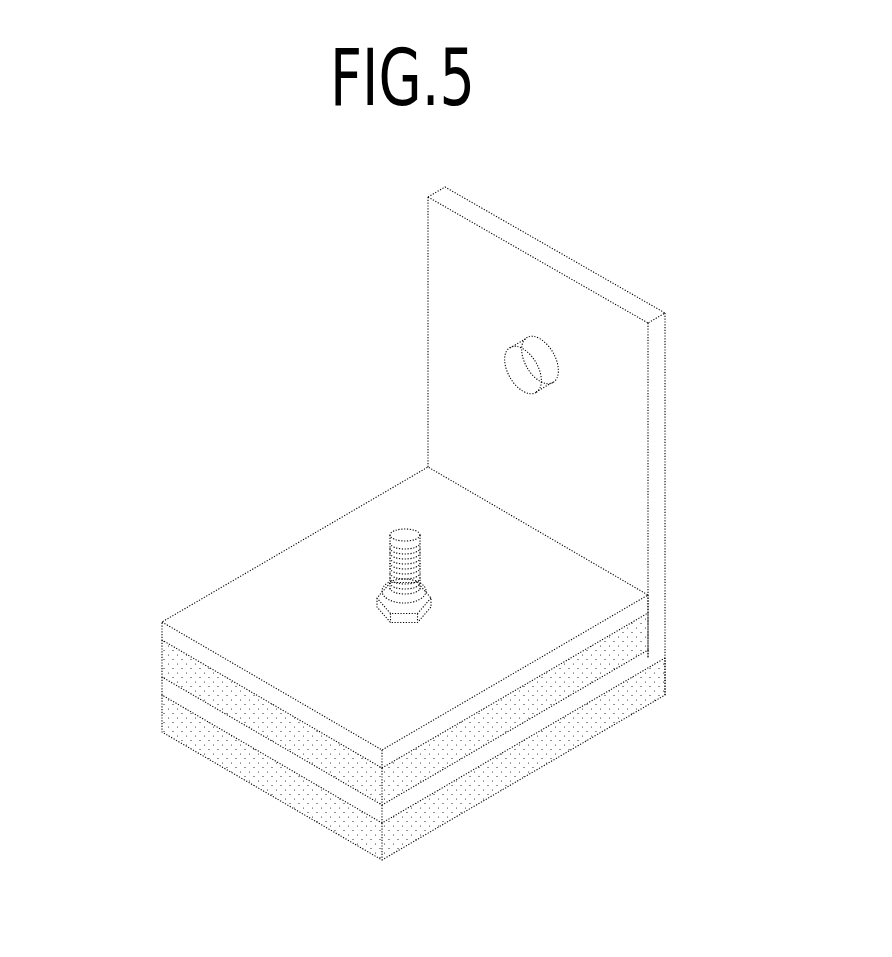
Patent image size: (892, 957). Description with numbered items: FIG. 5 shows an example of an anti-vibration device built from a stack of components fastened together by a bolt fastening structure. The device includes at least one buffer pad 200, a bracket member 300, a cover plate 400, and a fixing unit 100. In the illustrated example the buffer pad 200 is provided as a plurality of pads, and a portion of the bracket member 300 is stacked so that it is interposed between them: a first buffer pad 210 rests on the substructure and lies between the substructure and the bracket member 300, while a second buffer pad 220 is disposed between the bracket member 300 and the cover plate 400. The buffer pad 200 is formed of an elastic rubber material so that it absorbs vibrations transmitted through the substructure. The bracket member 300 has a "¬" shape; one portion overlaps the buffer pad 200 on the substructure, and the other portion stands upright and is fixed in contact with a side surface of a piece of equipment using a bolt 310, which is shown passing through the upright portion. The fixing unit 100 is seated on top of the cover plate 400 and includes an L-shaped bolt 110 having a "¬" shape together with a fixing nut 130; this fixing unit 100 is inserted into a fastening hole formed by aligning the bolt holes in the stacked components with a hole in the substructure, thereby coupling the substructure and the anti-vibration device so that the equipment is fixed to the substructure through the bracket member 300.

The fixing unit 100 is at (410, 525).
The L-shaped bolt 110 is at (419, 562).
The fixing nut 130 is at (432, 599).
The buffer pad 200 is at (345, 663).
The first buffer pad 210 is at (165, 710).
The second buffer pad 220 is at (165, 655).
The bracket member 300 is at (665, 486).
The bolt 310 is at (508, 352).
The cover plate 400 is at (200, 607).